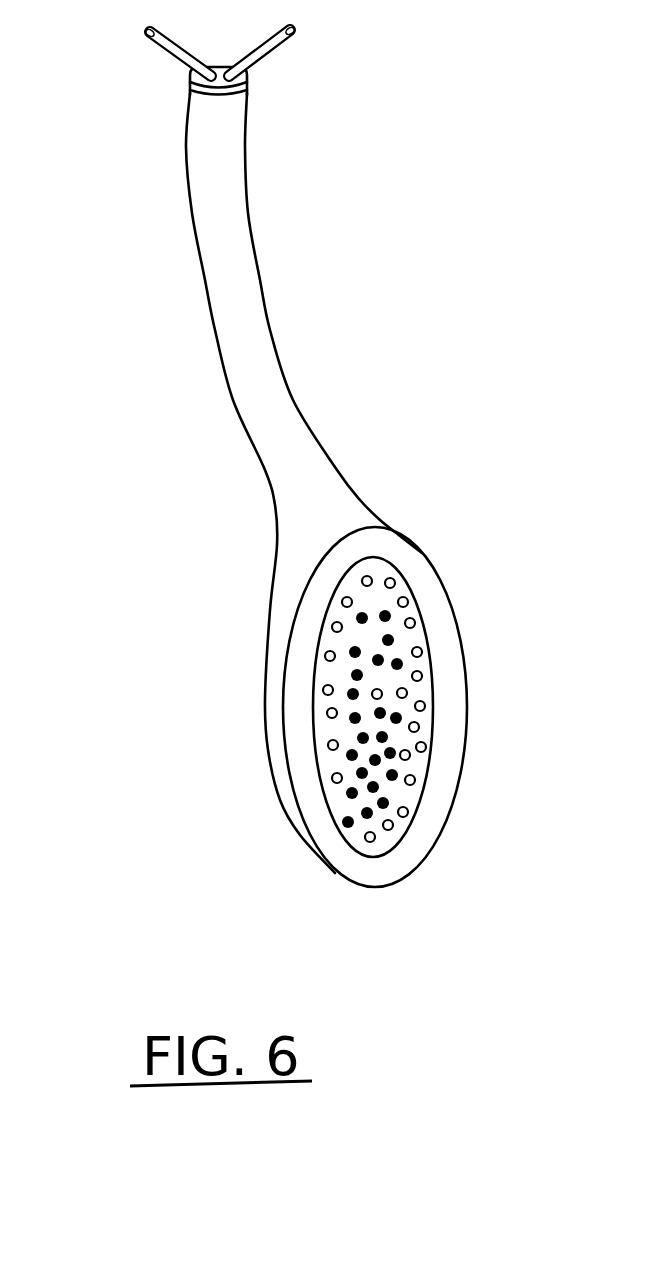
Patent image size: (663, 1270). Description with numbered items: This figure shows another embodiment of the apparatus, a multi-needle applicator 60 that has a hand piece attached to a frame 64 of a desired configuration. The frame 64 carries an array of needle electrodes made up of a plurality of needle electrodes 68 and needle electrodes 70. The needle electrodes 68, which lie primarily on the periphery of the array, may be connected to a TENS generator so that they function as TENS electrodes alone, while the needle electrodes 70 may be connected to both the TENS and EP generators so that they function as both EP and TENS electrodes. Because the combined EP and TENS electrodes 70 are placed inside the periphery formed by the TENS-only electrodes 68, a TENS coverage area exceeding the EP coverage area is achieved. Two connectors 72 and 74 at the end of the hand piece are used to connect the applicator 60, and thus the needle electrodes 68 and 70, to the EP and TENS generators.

The multi-needle applicator 60 is at (295, 490).
The frame 64 is at (442, 642).
The needle electrodes 68 is at (347, 602).
The needle electrodes 70 is at (362, 618).
The connector 72 is at (145, 38).
The connector 74 is at (283, 38).